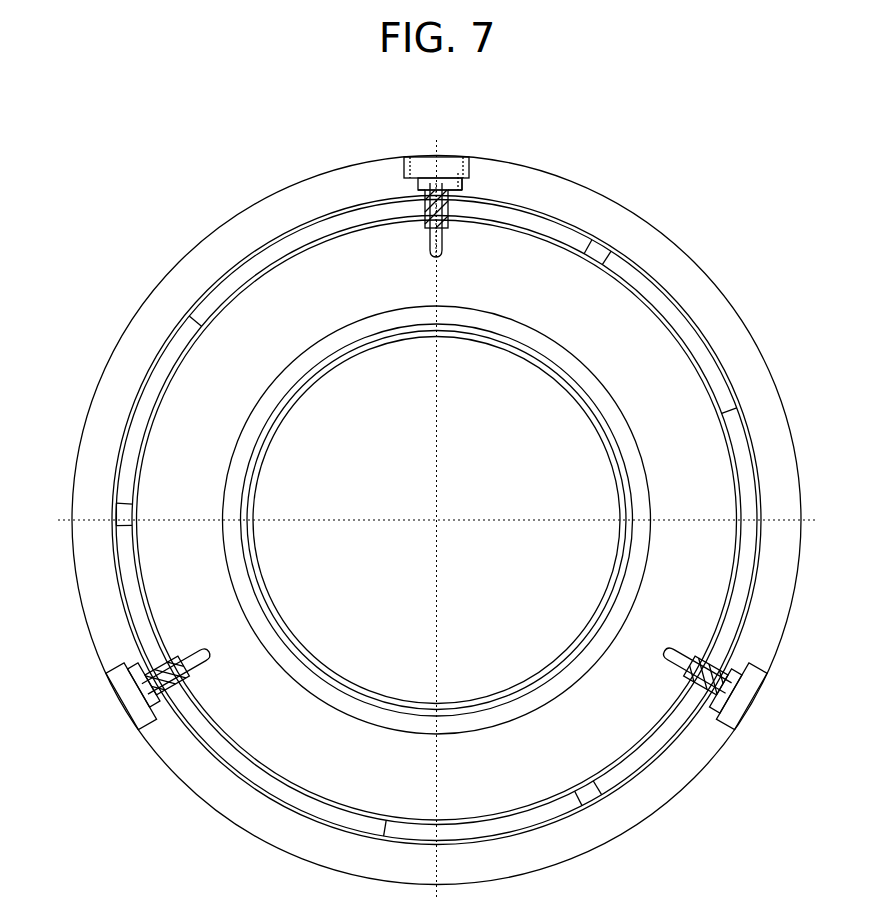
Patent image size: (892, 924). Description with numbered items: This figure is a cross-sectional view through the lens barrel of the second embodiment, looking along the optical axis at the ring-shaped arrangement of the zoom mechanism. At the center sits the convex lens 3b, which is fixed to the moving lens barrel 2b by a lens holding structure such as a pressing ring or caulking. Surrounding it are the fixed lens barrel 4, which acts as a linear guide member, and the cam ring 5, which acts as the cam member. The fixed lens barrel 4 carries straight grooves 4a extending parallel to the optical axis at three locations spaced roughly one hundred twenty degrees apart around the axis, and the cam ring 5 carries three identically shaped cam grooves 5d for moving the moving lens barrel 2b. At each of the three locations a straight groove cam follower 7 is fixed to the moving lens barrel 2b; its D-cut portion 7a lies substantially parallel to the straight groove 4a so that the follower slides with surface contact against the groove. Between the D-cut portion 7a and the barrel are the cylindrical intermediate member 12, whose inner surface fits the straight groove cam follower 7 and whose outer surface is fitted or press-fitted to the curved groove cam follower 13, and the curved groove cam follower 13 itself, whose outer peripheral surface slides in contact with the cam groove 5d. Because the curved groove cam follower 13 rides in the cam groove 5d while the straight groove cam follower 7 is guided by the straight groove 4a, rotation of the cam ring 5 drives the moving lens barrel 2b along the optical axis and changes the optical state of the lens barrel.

The moving lens barrel 2b is at (210, 345).
The lens 3b is at (285, 430).
The fixed lens barrel 4 is at (212, 245).
The straight groove 4a is at (410, 181).
The cam ring 5 is at (292, 242).
The cam groove 5d is at (583, 250).
The straight groove cam follower 7 is at (455, 190).
The D-cut portion 7a is at (462, 181).
The intermediate member 12 is at (447, 214).
The curved groove cam follower 13 is at (412, 198).